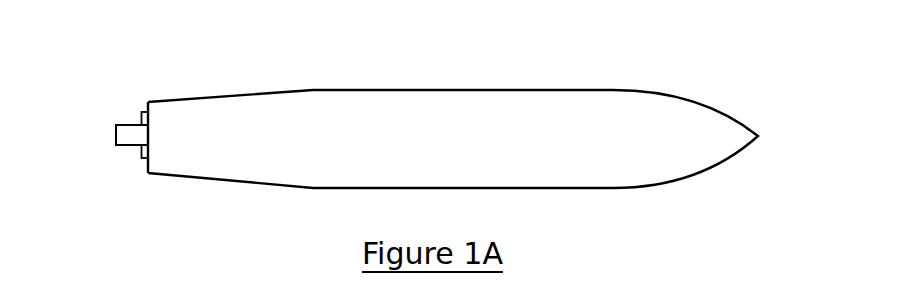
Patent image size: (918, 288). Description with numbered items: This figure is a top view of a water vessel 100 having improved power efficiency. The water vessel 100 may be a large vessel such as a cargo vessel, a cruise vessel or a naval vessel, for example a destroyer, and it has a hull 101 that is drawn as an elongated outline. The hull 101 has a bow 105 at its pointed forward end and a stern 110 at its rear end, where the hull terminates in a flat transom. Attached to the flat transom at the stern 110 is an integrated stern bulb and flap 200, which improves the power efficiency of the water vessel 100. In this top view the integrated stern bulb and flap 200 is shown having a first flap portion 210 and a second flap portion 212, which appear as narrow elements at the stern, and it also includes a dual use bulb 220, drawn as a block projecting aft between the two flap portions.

The water vessel 100 is at (426, 70).
The hull 101 is at (322, 150).
The bow 105 is at (753, 159).
The stern 110 is at (144, 180).
The integrated stern bulb and flap 200 is at (94, 120).
The first flap portion 210 is at (139, 155).
The second flap portion 212 is at (141, 111).
The dual use bulb 220 is at (114, 135).